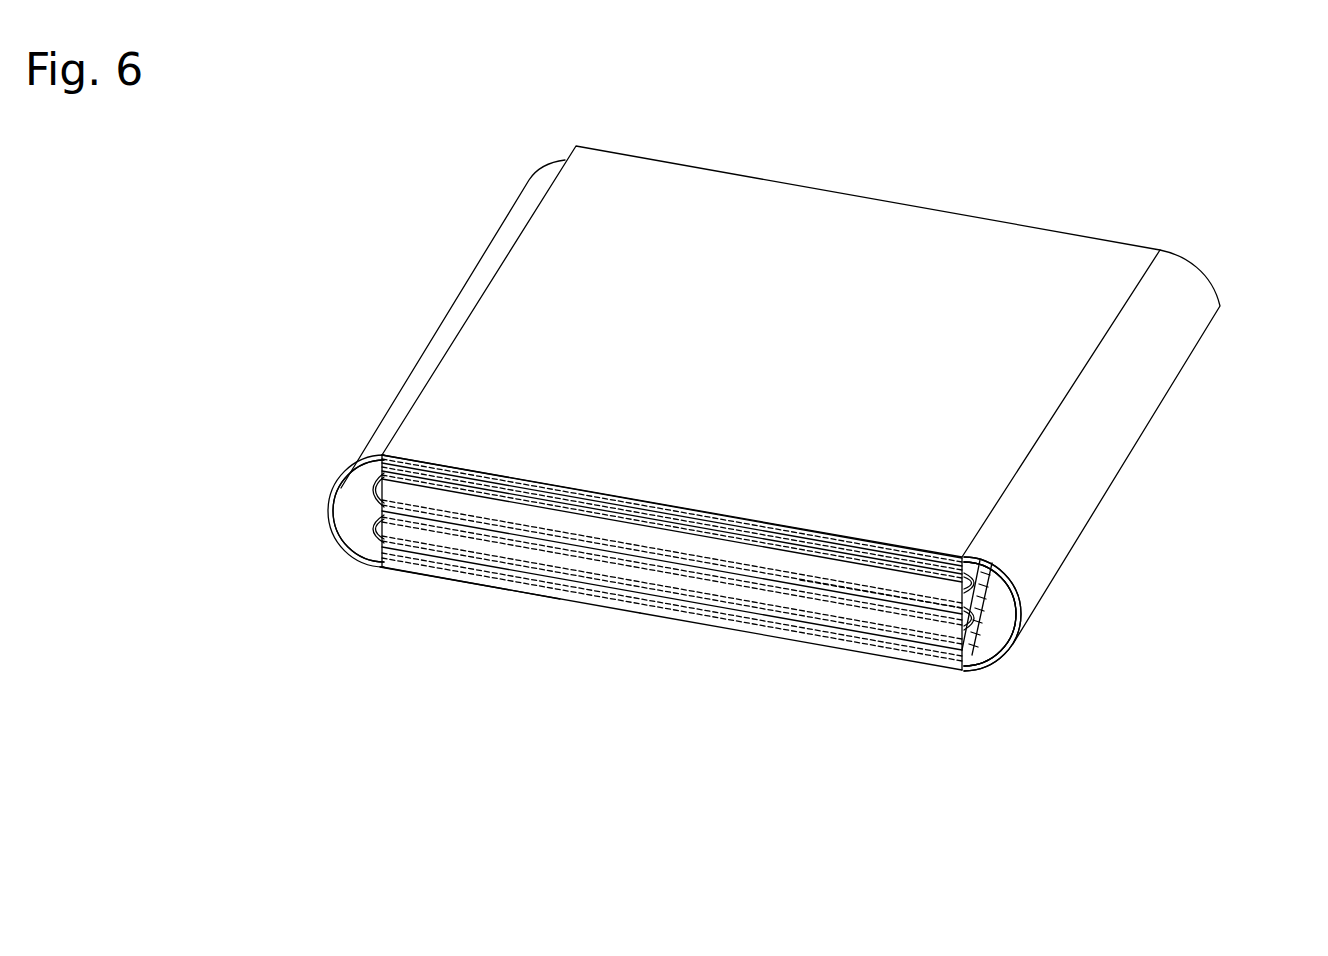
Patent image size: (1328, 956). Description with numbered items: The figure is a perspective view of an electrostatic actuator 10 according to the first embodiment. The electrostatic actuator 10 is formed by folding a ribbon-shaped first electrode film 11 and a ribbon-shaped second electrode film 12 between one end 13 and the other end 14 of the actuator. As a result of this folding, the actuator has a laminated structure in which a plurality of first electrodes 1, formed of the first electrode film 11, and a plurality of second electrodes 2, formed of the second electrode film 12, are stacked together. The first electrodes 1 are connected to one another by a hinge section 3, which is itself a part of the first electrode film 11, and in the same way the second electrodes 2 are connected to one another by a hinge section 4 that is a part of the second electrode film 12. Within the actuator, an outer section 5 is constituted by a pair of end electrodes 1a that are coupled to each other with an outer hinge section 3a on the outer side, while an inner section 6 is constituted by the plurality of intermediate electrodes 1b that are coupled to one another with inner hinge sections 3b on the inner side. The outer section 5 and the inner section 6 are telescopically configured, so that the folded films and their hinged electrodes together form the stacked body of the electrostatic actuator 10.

The first electrode 1 is at (763, 727).
The end electrode 1a is at (627, 617).
The intermediate electrode 1b is at (662, 600).
The second electrode 2 is at (411, 484).
The hinge section 3 is at (206, 457).
The outer hinge section 3a is at (365, 461).
The inner hinge section 3b is at (370, 505).
The hinge section 4 is at (905, 583).
The outer section 5 is at (1018, 643).
The inner section 6 is at (992, 647).
The electrostatic actuator 10 is at (1213, 184).
The first electrode film 11 is at (1198, 285).
The second electrode film 12 is at (813, 638).
The one end 13 is at (645, 157).
The other end 14 is at (490, 590).